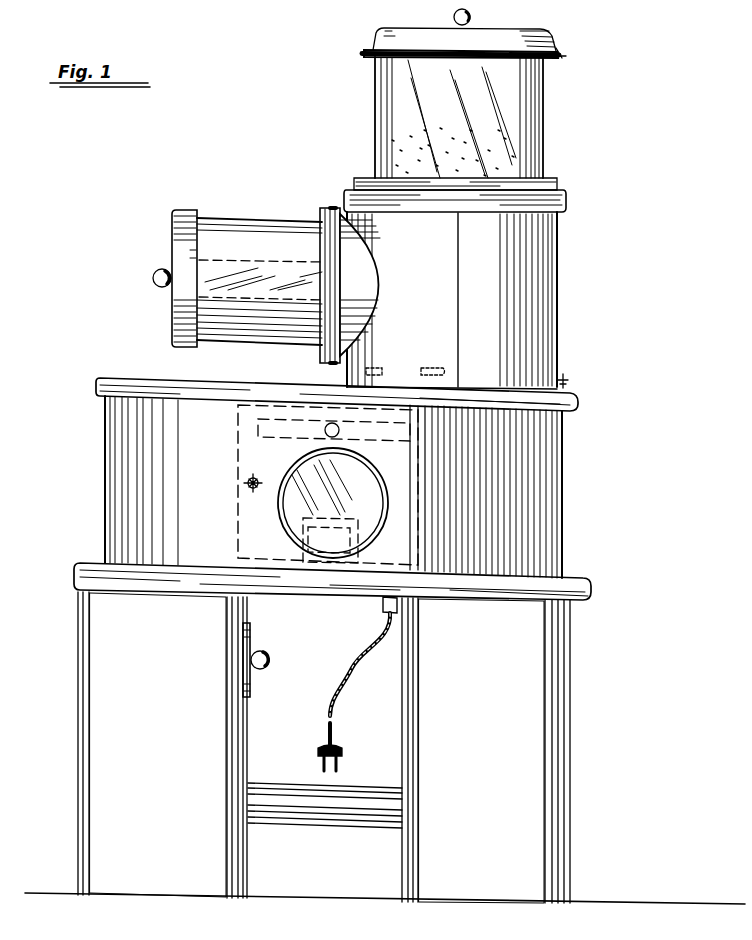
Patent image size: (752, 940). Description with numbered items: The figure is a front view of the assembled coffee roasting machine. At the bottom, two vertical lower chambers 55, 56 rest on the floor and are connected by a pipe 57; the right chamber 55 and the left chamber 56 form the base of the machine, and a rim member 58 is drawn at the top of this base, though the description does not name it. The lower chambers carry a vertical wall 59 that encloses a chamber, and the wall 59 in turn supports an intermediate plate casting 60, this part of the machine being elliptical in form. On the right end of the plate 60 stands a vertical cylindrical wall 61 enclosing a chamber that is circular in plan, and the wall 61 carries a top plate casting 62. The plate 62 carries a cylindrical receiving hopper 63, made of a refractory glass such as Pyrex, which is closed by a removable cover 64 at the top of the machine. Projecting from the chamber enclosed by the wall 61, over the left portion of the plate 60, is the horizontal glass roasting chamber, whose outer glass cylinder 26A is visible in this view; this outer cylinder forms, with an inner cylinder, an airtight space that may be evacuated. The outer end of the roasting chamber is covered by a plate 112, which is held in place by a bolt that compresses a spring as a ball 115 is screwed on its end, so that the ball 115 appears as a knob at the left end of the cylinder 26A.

The removable cover 64 is at (548, 45).
The cylindrical receiving hopper 63 is at (540, 134).
The top plate casting 62 is at (348, 192).
The vertical cylindrical wall 61 is at (555, 330).
The intermediate plate casting 60 is at (108, 378).
The vertical wall 59 is at (560, 488).
The base rim of cabinet 58 is at (582, 585).
The pipe 57 is at (270, 784).
The vertical lower chamber 56 is at (80, 662).
The vertical lower chamber 55 is at (571, 674).
The outer glass cylinder 26A is at (259, 278).
The plate 112 is at (175, 215).
The ball 115 is at (160, 269).